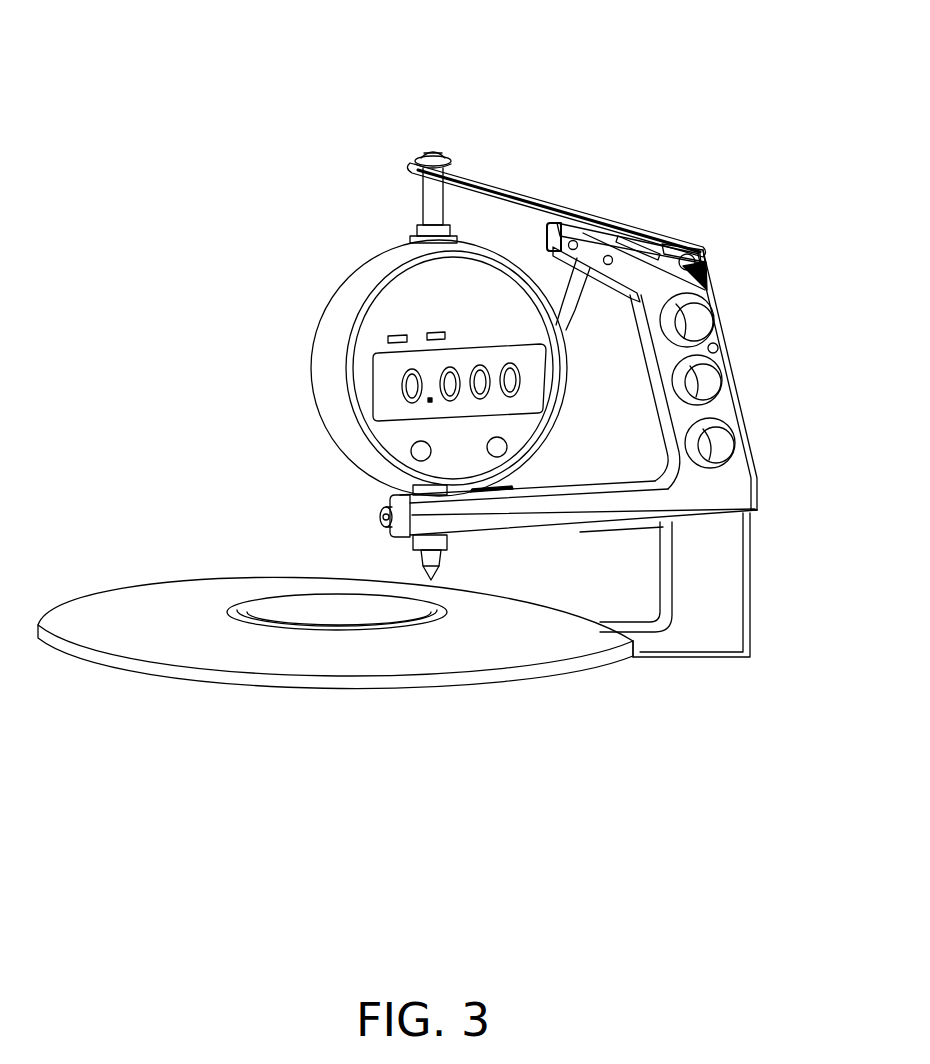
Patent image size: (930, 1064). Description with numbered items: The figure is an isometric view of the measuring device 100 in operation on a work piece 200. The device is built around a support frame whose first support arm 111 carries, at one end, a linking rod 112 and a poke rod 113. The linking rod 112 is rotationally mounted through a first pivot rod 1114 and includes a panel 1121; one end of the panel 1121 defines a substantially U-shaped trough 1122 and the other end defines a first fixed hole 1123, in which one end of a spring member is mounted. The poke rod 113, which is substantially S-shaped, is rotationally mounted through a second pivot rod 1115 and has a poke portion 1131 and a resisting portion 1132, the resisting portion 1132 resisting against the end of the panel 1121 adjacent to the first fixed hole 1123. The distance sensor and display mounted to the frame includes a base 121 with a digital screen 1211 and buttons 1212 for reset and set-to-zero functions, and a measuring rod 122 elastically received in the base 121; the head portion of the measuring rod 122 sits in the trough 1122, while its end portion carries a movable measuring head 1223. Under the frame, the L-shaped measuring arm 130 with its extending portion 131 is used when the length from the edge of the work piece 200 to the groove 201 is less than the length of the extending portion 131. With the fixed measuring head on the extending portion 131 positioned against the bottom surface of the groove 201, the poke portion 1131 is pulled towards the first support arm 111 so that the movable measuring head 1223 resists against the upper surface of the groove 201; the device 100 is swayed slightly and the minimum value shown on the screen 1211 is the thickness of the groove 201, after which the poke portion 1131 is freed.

The measuring device 100 is at (413, 32).
The first support arm 111 is at (599, 380).
The linking rod 112 is at (475, 161).
The poke rod 113 is at (773, 330).
The first pivot rod 1114 is at (585, 222).
The second pivot rod 1115 is at (612, 256).
The panel 1121 is at (600, 192).
The trough 1122 is at (416, 163).
The first fixed hole 1123 is at (703, 238).
The poke portion 1131 is at (592, 310).
The resisting portion 1132 is at (698, 272).
The base 121 is at (367, 272).
The digital screen 1211 is at (378, 385).
The buttons 1212 is at (412, 450).
The measuring rod 122 is at (430, 205).
The movable measuring head 1223 is at (422, 566).
The measuring arm 130 is at (702, 672).
The extending portion 131 is at (645, 652).
The work piece 200 is at (145, 598).
The groove 201 is at (245, 610).